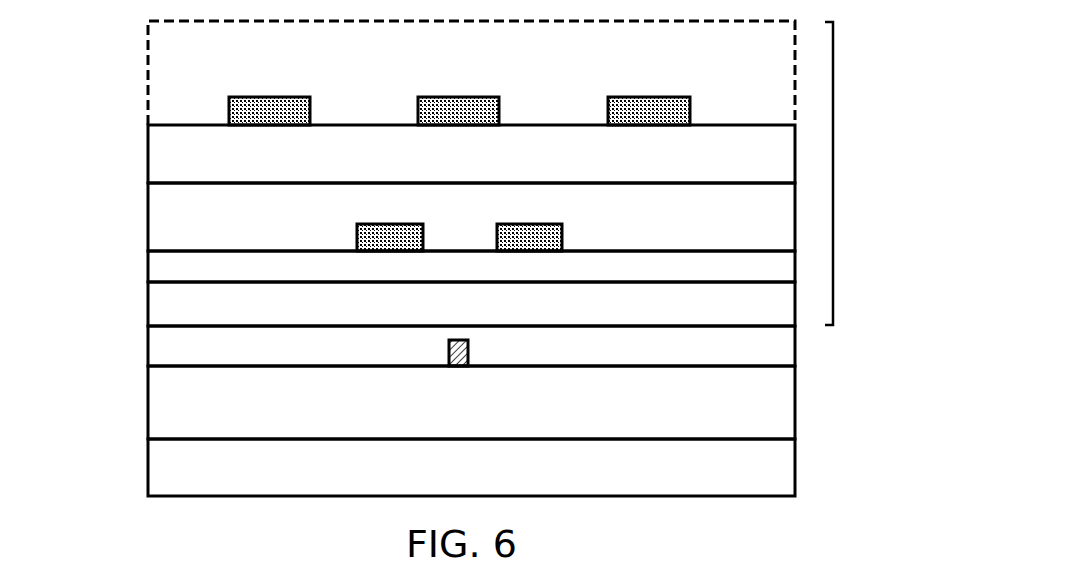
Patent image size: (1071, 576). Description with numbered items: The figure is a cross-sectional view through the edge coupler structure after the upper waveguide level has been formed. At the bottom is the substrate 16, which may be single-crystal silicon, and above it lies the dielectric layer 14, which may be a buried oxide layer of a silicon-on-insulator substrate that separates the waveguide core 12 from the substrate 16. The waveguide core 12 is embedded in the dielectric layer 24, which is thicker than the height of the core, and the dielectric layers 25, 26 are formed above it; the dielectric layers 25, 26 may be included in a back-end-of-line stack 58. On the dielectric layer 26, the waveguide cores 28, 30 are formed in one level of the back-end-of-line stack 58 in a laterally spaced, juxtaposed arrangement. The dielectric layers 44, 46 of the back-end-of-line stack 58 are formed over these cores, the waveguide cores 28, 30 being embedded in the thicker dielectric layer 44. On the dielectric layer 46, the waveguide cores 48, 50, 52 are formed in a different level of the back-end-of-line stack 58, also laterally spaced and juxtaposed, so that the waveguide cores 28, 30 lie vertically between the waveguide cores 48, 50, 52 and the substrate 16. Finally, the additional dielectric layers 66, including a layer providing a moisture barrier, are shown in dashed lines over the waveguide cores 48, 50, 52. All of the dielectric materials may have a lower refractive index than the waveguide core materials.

The waveguide core 12 is at (468, 352).
The dielectric layer 14 is at (742, 403).
The substrate 16 is at (750, 473).
The dielectric layer 24 is at (190, 352).
The dielectric layer 25 is at (190, 305).
The dielectric layer 26 is at (190, 274).
The waveguide core 28 is at (377, 242).
The waveguide core 30 is at (533, 240).
The dielectric layer 44 is at (190, 207).
The dielectric layer 46 is at (190, 153).
The waveguide core 48 is at (280, 110).
The waveguide core 50 is at (477, 114).
The waveguide core 52 is at (667, 114).
The back-end-of-line stack 58 is at (833, 173).
The additional dielectric layers 66 is at (175, 65).